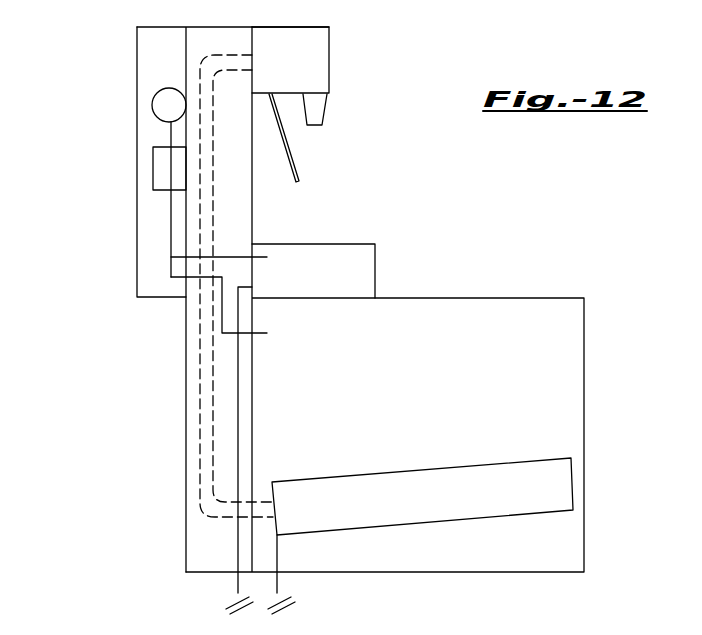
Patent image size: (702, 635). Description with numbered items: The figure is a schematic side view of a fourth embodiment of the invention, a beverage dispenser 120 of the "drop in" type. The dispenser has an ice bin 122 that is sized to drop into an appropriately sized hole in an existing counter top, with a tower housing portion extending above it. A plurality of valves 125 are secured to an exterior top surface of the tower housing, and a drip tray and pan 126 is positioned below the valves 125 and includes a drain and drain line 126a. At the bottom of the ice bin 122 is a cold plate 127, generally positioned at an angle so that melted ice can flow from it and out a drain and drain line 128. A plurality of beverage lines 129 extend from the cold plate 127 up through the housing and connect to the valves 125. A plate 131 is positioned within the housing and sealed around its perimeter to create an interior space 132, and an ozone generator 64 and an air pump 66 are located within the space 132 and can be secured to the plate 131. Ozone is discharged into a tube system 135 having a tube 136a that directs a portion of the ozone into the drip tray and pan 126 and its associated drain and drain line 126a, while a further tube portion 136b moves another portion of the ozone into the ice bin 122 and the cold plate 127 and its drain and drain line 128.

The dispenser 120 is at (397, 142).
The ice bin 122 is at (587, 398).
The valves 125 is at (330, 58).
The drip tray and pan 126 is at (375, 244).
The drain and drain line 126a is at (239, 318).
The cold plate 127 is at (418, 470).
The drain and drain line 128 is at (277, 560).
The beverage lines 129 is at (198, 448).
The plate 131 is at (187, 40).
The interior space 132 is at (137, 265).
The tube system 135 is at (169, 212).
The tube 136a is at (233, 255).
The further tube portion 136b is at (222, 333).
The ozone generator 64 is at (151, 110).
The air pump 66 is at (153, 172).